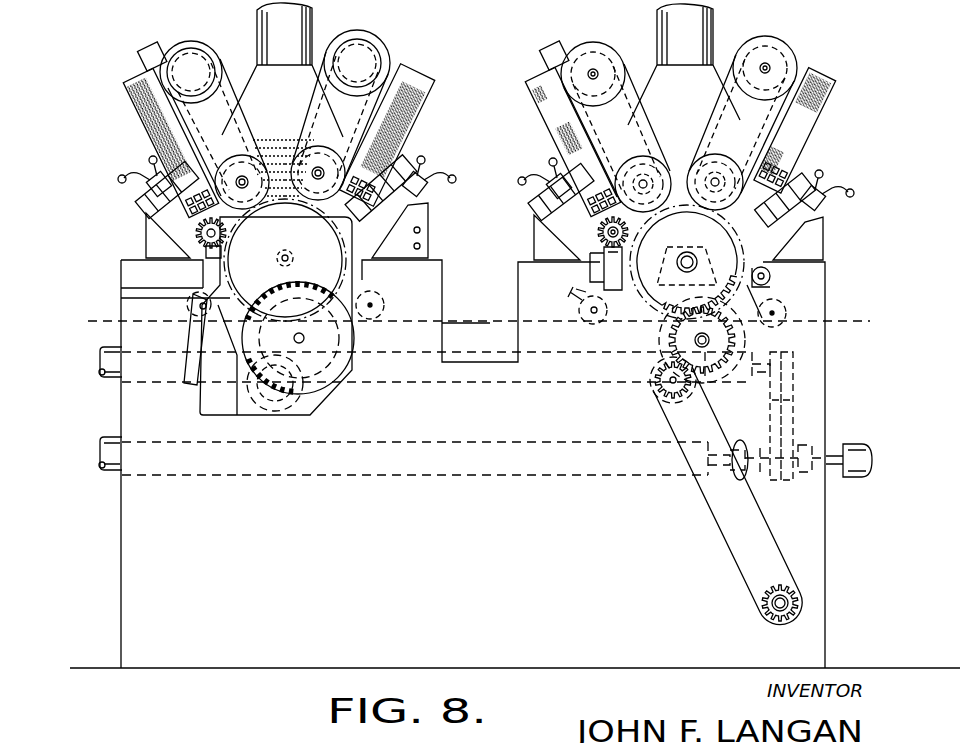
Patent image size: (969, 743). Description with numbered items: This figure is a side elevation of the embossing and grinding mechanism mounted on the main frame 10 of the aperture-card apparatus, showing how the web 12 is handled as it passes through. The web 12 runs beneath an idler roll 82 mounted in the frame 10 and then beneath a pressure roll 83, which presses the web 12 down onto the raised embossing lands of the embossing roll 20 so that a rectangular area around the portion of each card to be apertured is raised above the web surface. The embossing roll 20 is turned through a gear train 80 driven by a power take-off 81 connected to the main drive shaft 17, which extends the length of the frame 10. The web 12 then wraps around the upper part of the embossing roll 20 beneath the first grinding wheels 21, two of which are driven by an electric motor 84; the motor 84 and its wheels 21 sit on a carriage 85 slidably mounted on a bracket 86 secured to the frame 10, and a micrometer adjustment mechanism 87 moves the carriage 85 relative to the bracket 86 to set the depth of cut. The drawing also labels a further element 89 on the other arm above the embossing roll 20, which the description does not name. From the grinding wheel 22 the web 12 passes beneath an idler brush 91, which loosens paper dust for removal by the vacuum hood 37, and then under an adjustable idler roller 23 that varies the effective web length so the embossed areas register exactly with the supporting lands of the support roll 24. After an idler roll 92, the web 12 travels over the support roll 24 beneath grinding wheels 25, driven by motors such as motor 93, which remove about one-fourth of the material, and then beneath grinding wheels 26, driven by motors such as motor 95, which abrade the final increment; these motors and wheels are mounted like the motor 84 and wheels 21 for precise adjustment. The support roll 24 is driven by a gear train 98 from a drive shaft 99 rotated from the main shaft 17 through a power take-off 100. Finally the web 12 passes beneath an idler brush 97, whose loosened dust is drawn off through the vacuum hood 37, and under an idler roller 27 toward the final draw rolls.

The main frame 10 is at (515, 464).
The web 12 is at (90, 323).
The main drive shaft 17 is at (558, 474).
The embossing roll 20 is at (662, 299).
The first grinding wheels 21 is at (717, 152).
The grinding wheel 22 is at (681, 157).
The idler roller 23 is at (592, 323).
The support roll 24 is at (291, 266).
The grinding wheels 25 is at (290, 140).
The grinding wheels 26 is at (270, 140).
The idler roller 27 is at (192, 307).
The vacuum hood 37 is at (312, 52).
The gear train 80 is at (730, 343).
The power take-off 81 is at (768, 507).
The idler roll 82 is at (786, 310).
The pressure roll 83 is at (759, 266).
The electric motor 84 is at (793, 52).
The carriage 85 is at (412, 78).
The bracket 86 is at (145, 216).
The micrometer adjustment mechanism 87 is at (150, 194).
The belt arm 89 is at (593, 48).
The idler brush 91 is at (628, 233).
The idler roll 92 is at (385, 300).
The motor 93 is at (388, 45).
The motor 95 is at (213, 44).
The idler brush 97 is at (198, 236).
The gear train 98 is at (320, 395).
The drive shaft 99 is at (546, 375).
The power take-off 100 is at (797, 393).